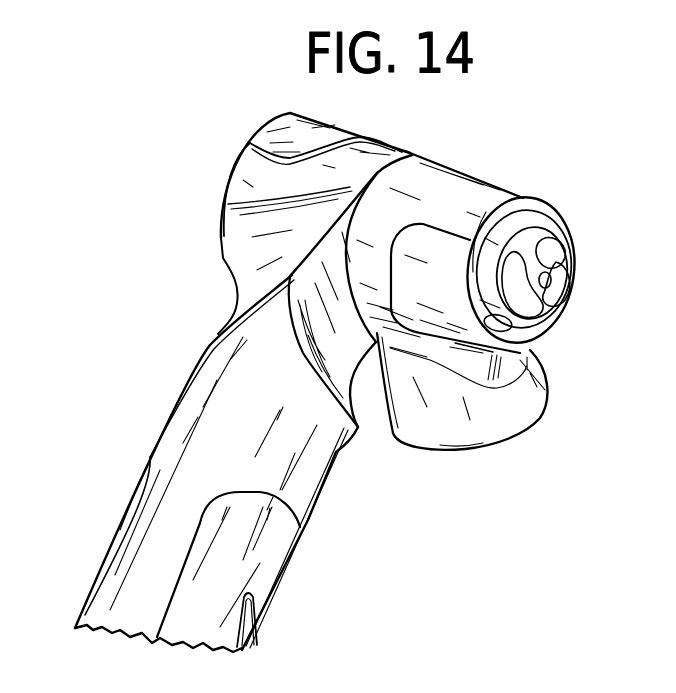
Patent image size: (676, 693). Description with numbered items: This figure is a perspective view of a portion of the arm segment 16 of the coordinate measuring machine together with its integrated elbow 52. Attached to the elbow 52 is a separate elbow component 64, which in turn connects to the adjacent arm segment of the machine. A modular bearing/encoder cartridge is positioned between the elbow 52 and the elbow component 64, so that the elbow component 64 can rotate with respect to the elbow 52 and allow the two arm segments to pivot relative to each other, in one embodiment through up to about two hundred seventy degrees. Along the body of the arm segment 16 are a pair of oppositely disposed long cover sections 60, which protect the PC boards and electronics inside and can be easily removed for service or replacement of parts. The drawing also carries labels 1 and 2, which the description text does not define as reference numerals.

The nozzle housing 1 is at (493, 413).
The trigger 2 is at (300, 447).
The arm segment 16 is at (190, 383).
The elbow 52 is at (260, 177).
The long cover sections 60 is at (115, 562).
The elbow component 64 is at (541, 152).